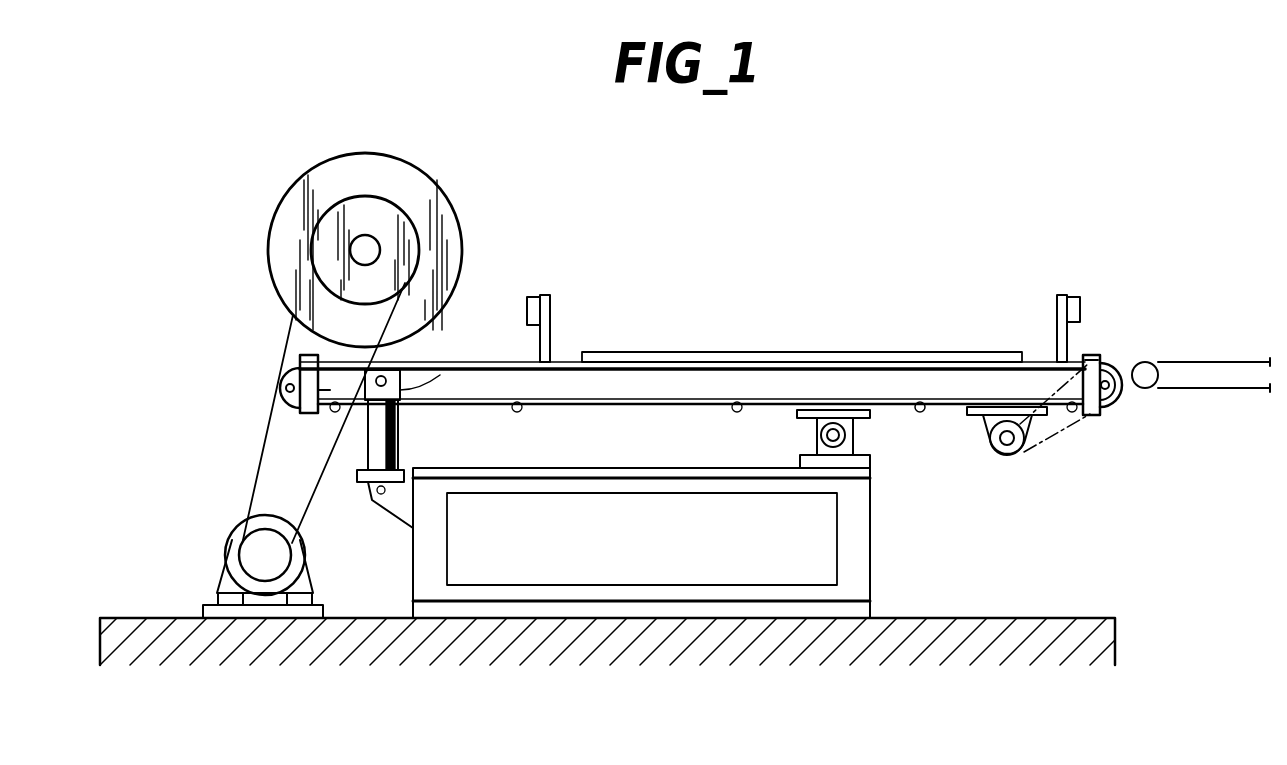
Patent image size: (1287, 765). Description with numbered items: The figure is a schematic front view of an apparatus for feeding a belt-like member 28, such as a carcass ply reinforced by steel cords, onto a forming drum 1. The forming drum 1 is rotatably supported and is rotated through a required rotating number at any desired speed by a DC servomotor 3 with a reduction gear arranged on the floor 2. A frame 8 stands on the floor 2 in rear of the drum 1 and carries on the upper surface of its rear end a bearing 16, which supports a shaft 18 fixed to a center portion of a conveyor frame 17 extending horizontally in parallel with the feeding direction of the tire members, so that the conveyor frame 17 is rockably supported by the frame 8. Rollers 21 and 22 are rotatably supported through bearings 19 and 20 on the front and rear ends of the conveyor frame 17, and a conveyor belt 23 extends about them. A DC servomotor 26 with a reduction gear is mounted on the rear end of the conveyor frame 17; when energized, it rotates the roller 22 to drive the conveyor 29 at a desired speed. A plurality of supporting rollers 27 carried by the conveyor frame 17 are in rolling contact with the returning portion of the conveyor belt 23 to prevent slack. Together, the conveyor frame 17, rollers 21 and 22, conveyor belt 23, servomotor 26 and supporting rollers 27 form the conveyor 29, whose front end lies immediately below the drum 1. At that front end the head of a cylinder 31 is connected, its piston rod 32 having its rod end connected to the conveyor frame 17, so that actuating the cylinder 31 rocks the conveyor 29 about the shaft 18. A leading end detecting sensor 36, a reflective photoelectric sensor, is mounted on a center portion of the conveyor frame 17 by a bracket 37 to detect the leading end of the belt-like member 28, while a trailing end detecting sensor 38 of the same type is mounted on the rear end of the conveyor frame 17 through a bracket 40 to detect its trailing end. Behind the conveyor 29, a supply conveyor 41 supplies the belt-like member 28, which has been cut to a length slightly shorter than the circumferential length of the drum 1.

The forming drum 1 is at (455, 216).
The floor 2 is at (155, 618).
The DC servomotor 3 is at (300, 583).
The frame 8 is at (858, 548).
The bearing 16 is at (853, 437).
The conveyor frame 17 is at (890, 380).
The shaft 18 is at (820, 440).
The bearing 19 is at (303, 412).
The bearing 20 is at (1112, 402).
The roller 21 is at (270, 388).
The roller 22 is at (1113, 365).
The conveyor belt 23 is at (818, 352).
The DC servomotor 26 is at (985, 450).
The supporting rollers 27 is at (922, 412).
The belt-like member 28 is at (742, 352).
The conveyor 29 is at (639, 347).
The cylinder 31 is at (398, 441).
The piston rod 32 is at (402, 386).
The leading end detecting sensor 36 is at (530, 298).
The bracket 37 is at (552, 300).
The trailing end detecting sensor 38 is at (1076, 298).
The bracket 40 is at (1057, 300).
The supply conveyor 41 is at (1193, 355).